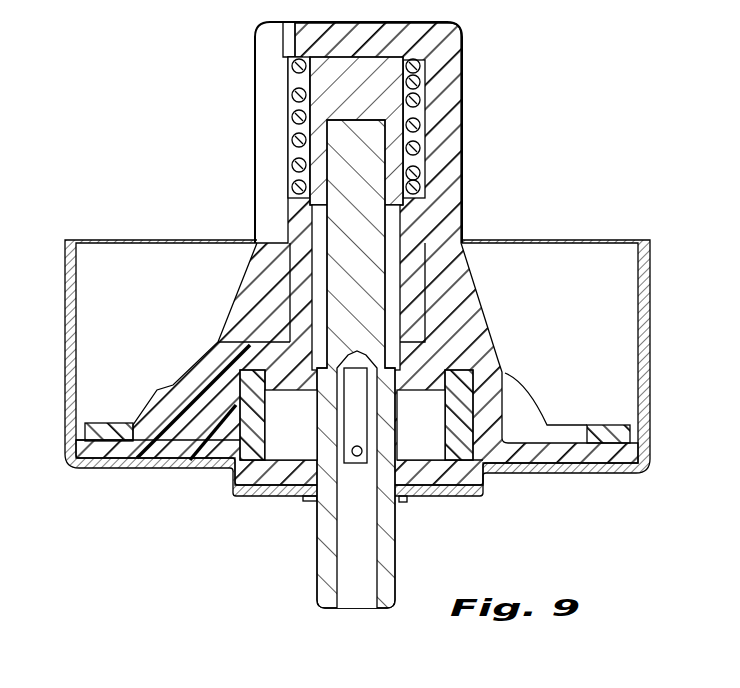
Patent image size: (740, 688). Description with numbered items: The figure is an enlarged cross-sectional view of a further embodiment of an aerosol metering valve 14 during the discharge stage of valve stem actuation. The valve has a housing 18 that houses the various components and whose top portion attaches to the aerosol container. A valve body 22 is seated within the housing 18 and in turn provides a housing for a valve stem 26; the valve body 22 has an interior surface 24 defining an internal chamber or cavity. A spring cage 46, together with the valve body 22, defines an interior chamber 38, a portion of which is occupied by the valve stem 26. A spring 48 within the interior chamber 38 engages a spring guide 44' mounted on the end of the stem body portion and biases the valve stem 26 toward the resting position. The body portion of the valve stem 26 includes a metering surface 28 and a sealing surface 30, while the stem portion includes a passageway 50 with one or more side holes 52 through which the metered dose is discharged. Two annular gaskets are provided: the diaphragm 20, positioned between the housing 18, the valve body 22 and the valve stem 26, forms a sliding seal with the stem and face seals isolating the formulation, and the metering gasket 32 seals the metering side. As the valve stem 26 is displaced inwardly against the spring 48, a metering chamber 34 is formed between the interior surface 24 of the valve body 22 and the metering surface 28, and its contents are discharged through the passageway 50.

The metering valve 14 is at (326, 338).
The housing 18 is at (70, 305).
The diaphragm 20 is at (428, 483).
The valve body 22 is at (472, 490).
The interior surface 24 is at (433, 420).
The valve stem 26 is at (312, 384).
The metering surface 28 is at (232, 404).
The sealing surface 30 is at (280, 343).
The metering gasket 32 is at (433, 420).
The metering chamber 34 is at (470, 378).
The interior chamber 38 is at (310, 310).
The spring guide 44' is at (420, 364).
The spring cage 46 is at (272, 105).
The spring 48 is at (416, 86).
The passageway 50 is at (414, 390).
The side holes 52 is at (358, 456).